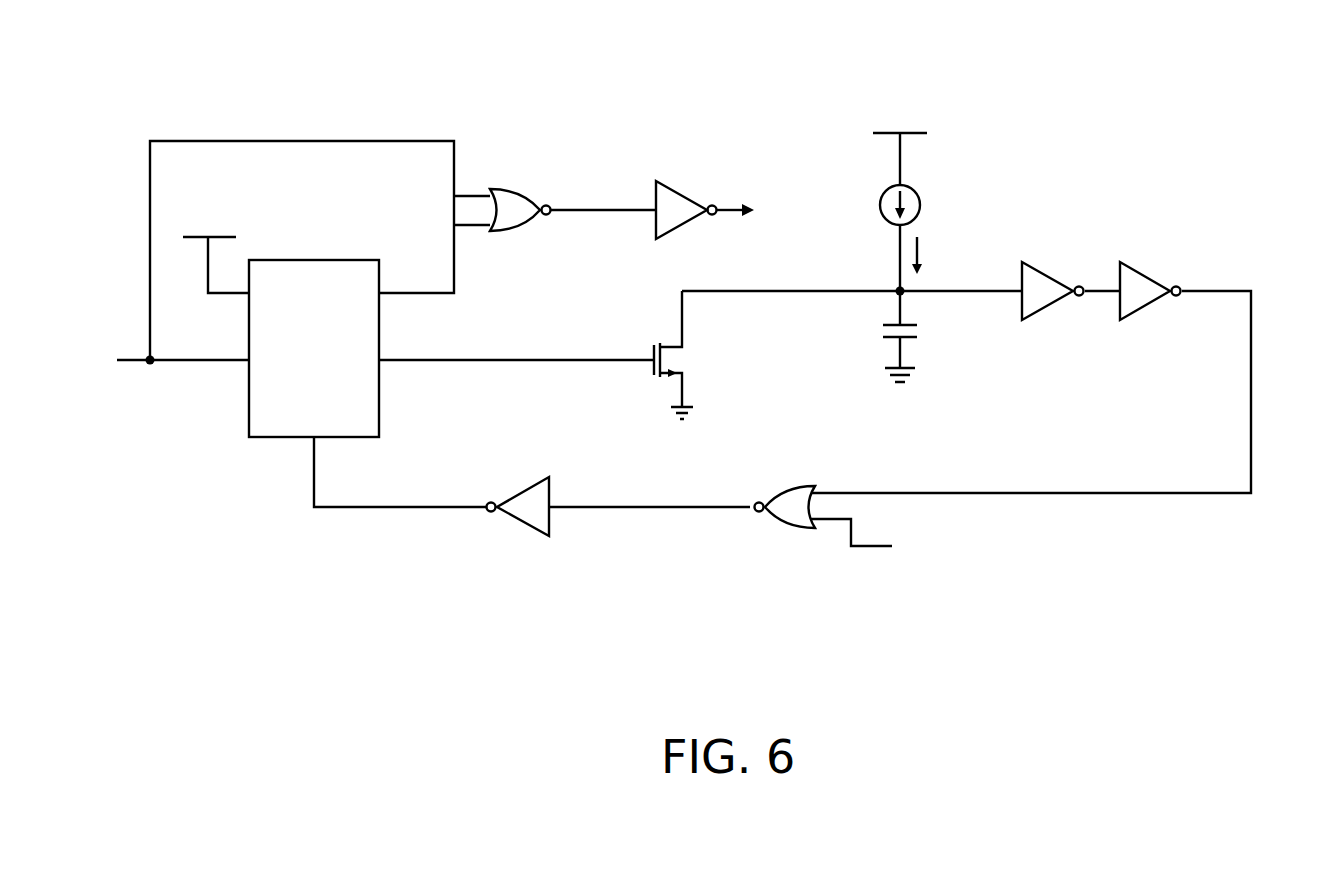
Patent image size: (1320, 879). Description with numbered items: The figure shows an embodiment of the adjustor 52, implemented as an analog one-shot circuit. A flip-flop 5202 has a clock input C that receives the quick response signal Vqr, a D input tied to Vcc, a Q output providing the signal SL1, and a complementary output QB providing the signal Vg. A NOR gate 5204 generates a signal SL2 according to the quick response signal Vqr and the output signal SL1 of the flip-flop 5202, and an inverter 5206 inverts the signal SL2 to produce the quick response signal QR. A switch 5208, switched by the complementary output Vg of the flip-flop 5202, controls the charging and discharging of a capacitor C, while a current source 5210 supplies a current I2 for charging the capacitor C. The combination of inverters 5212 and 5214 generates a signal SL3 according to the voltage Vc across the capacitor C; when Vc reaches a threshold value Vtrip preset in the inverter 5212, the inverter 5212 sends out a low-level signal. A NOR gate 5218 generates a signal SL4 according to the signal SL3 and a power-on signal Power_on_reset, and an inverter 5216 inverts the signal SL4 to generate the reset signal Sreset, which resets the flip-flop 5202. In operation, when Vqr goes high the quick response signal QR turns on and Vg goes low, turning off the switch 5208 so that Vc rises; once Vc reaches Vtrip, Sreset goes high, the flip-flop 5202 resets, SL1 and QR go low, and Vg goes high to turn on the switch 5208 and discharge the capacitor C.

The adjustor 52 is at (1257, 93).
The flip-flop 5202 is at (312, 258).
The NOR gate 5204 is at (517, 189).
The inverter 5206 is at (688, 193).
The switch 5208 is at (651, 341).
The current source 5210 is at (918, 190).
The inverter 5212 is at (1080, 252).
The inverter 5214 is at (1175, 252).
The inverter 5216 is at (520, 490).
The NOR gate 5218 is at (780, 485).